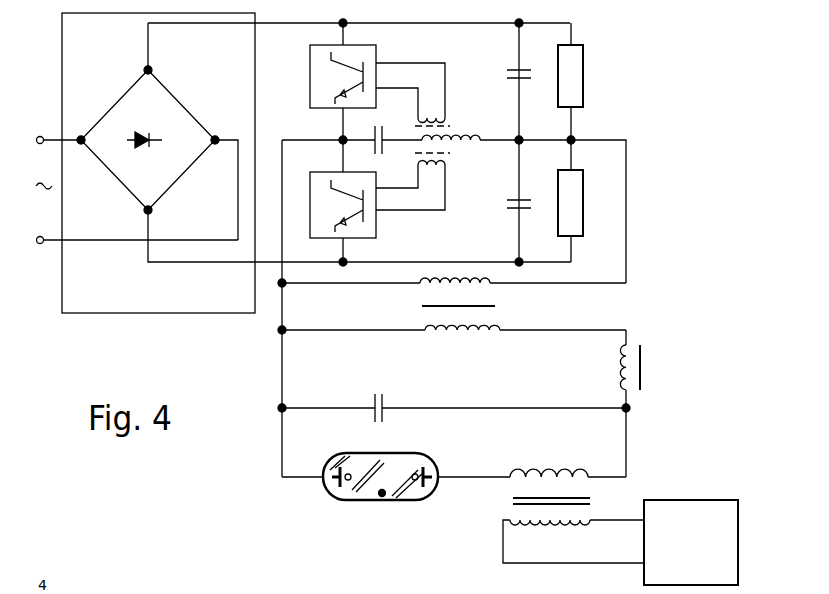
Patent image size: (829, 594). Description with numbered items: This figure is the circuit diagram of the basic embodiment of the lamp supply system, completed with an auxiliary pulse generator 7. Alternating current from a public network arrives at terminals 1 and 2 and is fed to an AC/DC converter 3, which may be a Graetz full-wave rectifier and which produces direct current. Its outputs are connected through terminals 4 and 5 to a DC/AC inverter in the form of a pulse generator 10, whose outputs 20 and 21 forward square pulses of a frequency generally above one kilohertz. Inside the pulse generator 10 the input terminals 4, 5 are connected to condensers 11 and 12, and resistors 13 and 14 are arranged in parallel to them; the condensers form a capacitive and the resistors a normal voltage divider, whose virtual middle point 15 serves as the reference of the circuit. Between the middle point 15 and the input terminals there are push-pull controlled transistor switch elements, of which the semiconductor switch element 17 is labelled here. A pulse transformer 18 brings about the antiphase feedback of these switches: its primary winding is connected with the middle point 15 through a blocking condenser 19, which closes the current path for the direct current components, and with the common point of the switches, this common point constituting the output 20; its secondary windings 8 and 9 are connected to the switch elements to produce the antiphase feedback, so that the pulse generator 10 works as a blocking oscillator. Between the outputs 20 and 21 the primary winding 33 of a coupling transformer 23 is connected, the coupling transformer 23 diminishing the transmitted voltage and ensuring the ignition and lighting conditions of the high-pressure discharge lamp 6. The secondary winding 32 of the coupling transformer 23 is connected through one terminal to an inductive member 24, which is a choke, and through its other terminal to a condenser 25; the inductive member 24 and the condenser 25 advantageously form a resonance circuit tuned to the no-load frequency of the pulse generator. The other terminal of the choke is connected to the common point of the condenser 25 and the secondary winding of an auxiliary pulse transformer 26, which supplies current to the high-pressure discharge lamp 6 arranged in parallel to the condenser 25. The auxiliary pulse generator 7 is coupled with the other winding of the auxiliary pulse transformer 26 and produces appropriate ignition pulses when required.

The terminal 1 is at (58, 128).
The terminal 2 is at (136, 228).
The AC/DC converter 3 is at (102, 303).
The terminal 4 is at (550, 22).
The terminal 5 is at (232, 262).
The high-pressure discharge lamp 6 is at (389, 472).
The auxiliary pulse generator 7 is at (698, 502).
The secondary winding 8 is at (432, 115).
The secondary winding 9 is at (432, 170).
The pulse generator 10 is at (641, 115).
The condenser 11 is at (506, 74).
The condenser 12 is at (506, 208).
The resistor 13 is at (575, 72).
The resistor 14 is at (576, 220).
The middle point 15 is at (568, 138).
The semiconductor switch element 17 is at (366, 228).
The pulse transformer 18 is at (460, 150).
The blocking condenser 19 is at (382, 124).
The output 20 is at (280, 292).
The output 21 is at (628, 268).
The coupling transformer 23 is at (503, 308).
The inductive member 24 is at (643, 370).
The condenser 25 is at (378, 394).
The auxiliary pulse transformer 26 is at (502, 500).
The secondary winding 32 is at (460, 338).
The primary winding 33 is at (478, 282).